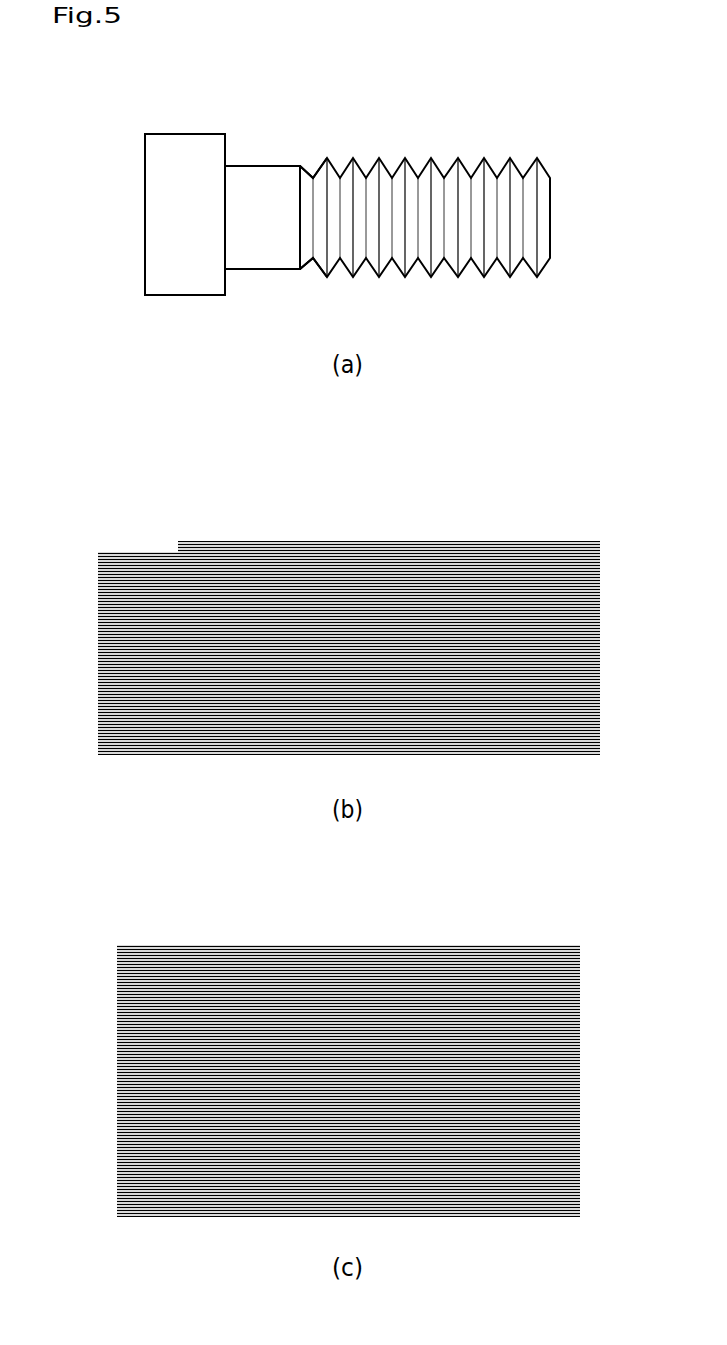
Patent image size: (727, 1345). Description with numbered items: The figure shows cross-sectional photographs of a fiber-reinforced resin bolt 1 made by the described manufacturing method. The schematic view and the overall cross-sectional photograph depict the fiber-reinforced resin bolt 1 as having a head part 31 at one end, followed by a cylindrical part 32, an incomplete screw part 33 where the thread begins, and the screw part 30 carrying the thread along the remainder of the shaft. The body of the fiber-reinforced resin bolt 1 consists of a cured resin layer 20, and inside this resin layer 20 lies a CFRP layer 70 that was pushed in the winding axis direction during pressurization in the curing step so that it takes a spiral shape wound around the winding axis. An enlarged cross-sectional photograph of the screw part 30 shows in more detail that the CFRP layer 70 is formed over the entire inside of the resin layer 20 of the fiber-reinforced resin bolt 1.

The fiber-reinforced resin bolt 1 is at (186, 558).
The resin layer 20 is at (510, 624).
The screw part 30 is at (428, 156).
The head part 31 is at (168, 133).
The cylindrical part 32 is at (267, 165).
The incomplete screw part 33 is at (310, 173).
The CFRP layer 70 is at (497, 667).